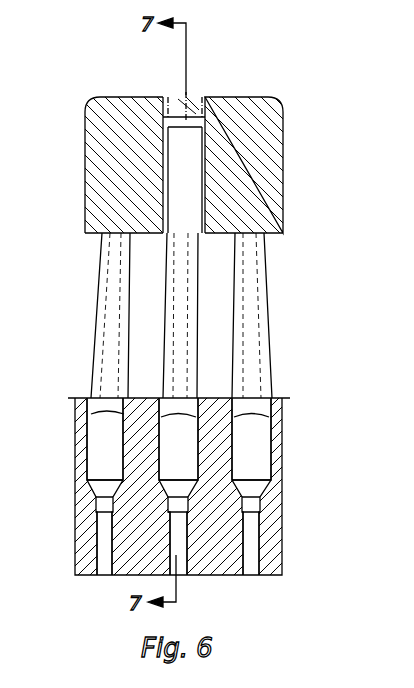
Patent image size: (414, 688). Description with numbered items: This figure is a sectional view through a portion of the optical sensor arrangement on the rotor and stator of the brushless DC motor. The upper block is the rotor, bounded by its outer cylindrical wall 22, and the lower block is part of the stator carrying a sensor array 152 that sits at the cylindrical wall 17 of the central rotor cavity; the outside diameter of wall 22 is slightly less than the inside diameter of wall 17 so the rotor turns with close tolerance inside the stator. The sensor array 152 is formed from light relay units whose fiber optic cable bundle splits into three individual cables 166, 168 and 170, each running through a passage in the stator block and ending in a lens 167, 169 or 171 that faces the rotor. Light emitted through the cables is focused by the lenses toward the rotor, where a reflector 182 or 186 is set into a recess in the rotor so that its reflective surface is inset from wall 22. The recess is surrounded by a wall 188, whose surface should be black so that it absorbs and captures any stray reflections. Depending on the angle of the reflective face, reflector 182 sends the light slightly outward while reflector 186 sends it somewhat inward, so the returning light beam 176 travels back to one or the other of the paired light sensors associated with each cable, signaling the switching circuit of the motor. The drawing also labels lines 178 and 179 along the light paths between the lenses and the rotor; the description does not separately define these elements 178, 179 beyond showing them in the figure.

The cylindrical wall 17 is at (207, 468).
The outer cylindrical wall 22 is at (88, 234).
The sensor array 152 is at (66, 527).
The individual cable 166 is at (105, 554).
The lens 167 is at (100, 435).
The individual cable 168 is at (178, 530).
The lens 169 is at (180, 452).
The individual cable 170 is at (250, 553).
The lens 171 is at (252, 440).
The light beam 176 is at (165, 340).
The fiber core 178 is at (172, 284).
The left optical fiber 179 is at (92, 360).
The reflector 182 is at (200, 96).
The reflector 186 is at (172, 96).
The wall 188 is at (166, 164).